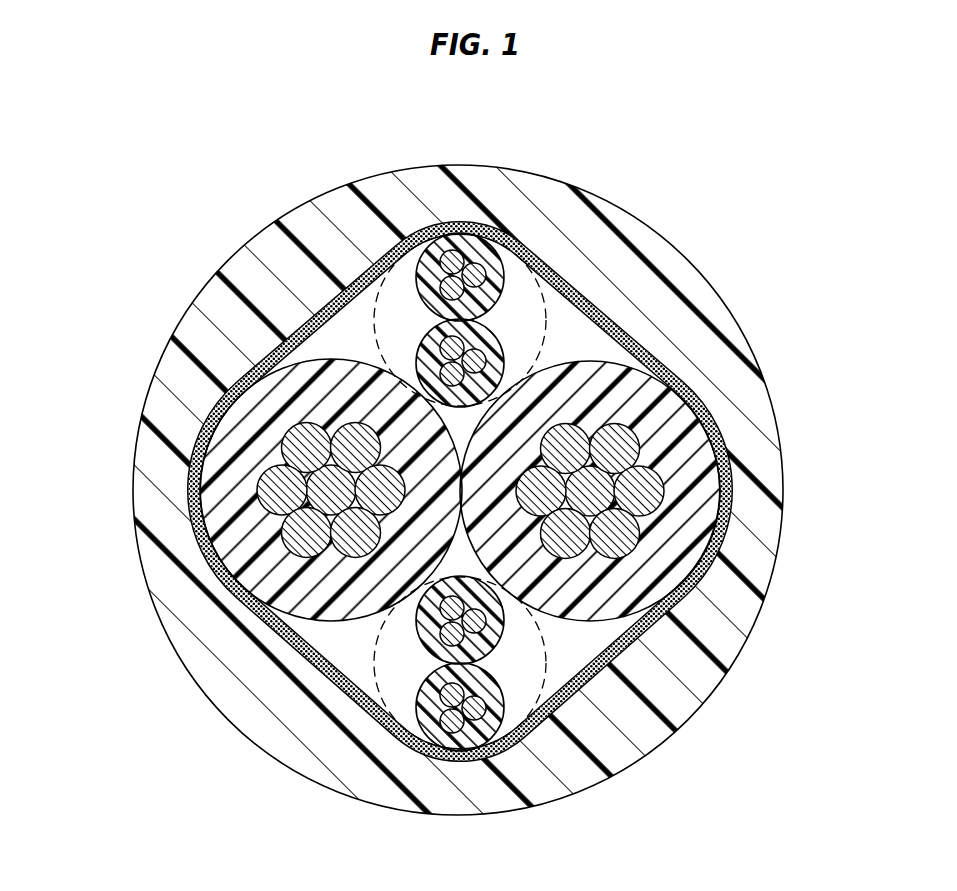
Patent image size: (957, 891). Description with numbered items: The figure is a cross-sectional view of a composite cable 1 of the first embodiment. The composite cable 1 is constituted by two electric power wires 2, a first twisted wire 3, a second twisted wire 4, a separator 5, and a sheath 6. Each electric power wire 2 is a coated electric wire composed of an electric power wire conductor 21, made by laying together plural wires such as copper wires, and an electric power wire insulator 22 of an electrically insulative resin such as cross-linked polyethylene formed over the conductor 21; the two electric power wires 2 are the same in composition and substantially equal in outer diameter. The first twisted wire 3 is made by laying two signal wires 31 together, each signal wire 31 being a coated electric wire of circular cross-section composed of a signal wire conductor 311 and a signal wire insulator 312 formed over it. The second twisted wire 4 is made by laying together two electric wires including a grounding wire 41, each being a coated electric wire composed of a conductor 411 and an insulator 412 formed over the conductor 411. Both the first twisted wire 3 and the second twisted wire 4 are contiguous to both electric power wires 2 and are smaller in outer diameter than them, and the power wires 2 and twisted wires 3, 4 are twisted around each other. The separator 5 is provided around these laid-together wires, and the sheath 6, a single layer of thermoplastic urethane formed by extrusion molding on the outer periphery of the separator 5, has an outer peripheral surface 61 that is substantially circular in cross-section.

The composite cable 1 is at (722, 159).
The electric power wire 2 is at (463, 490).
The electric power wire conductor 21 is at (254, 484).
The electric power wire insulator 22 is at (246, 521).
The first twisted wire 3 is at (489, 723).
The signal wire 31 is at (452, 723).
The signal wire conductor 311 is at (432, 688).
The signal wire insulator 312 is at (421, 626).
The second twisted wire 4 is at (472, 260).
The grounding wire 41 is at (455, 260).
The conductor 411 is at (440, 333).
The insulator 412 is at (450, 262).
The separator 5 is at (628, 338).
The sheath 6 is at (452, 490).
The outer peripheral surface 61 is at (212, 702).